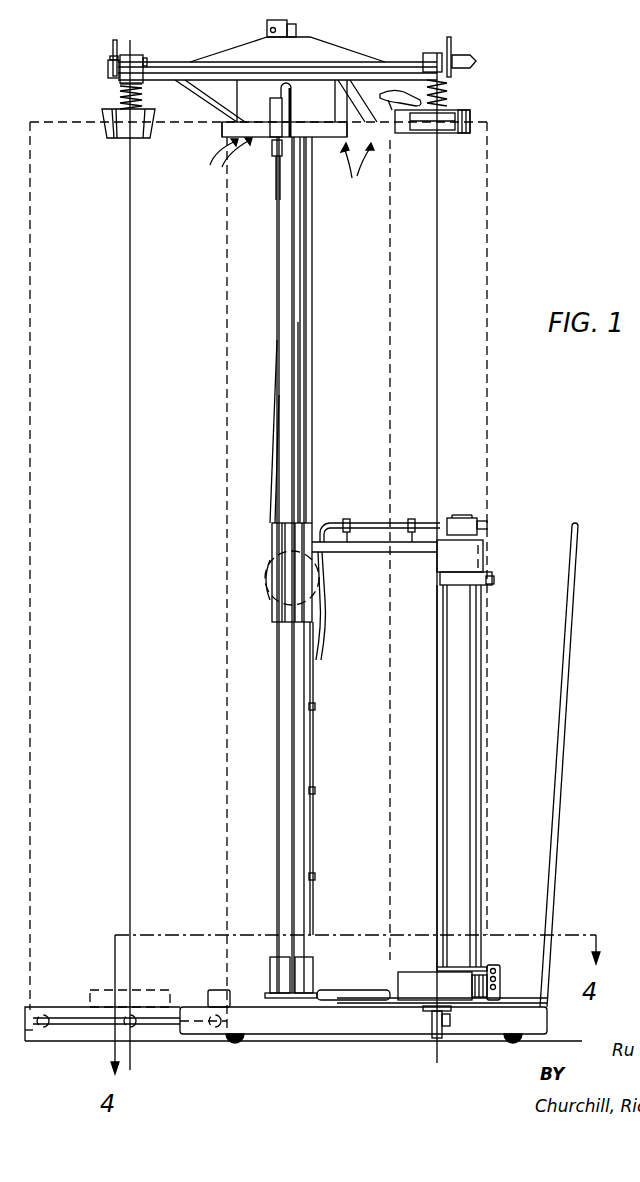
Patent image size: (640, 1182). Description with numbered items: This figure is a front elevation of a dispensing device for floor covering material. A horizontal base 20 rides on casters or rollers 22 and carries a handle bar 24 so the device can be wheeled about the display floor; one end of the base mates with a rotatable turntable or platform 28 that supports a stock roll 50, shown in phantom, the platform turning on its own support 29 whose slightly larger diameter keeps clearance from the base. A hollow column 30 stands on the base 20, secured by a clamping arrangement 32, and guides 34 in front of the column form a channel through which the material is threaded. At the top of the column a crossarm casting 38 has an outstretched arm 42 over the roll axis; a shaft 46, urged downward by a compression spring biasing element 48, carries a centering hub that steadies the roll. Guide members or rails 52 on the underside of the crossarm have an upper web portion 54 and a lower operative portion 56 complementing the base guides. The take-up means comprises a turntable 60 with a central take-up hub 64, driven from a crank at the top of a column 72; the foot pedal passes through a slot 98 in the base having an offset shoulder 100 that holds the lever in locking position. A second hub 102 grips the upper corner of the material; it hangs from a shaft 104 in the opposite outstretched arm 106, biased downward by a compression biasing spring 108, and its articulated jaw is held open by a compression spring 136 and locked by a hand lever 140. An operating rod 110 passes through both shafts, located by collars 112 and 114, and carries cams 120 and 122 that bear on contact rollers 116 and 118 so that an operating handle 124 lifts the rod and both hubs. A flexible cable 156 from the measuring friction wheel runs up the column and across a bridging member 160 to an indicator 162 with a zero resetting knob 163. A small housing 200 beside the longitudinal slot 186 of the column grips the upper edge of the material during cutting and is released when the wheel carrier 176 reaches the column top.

The horizontal base 20 is at (345, 1030).
The casters or rollers 22 is at (232, 1043).
The handle bar 24 is at (568, 630).
The turntable or platform 28 is at (72, 1006).
The support 29 is at (80, 1034).
The hollow column 30 is at (306, 420).
The clamping arrangement 32 is at (272, 972).
The guides 34 is at (248, 996).
The crossarm casting 38 is at (255, 34).
The outstretched arm 42 is at (222, 60).
The shaft 46 is at (143, 97).
The compression spring biasing element 48 is at (110, 97).
The stock roll 50 is at (52, 118).
The guide members or rails 52 is at (279, 166).
The upper web portion 54 is at (337, 82).
The lower operative portion 56 is at (340, 135).
The horizontal circular platform or turntable 60 is at (510, 1000).
The take-up hub 64 is at (410, 982).
The column 72 is at (468, 686).
The slot 98 is at (432, 1024).
The offset shoulder 100 is at (450, 1030).
The second hub 102 is at (470, 123).
The shaft 104 is at (470, 112).
The outstretched arm 106 is at (370, 70).
The compression biasing spring 108 is at (422, 100).
The operating rod 110 is at (320, 58).
The collar 112 is at (135, 56).
The collar 114 is at (430, 53).
The contact roller 116 is at (115, 78).
The contact roller 118 is at (448, 90).
The cam 120 is at (113, 45).
The cam 122 is at (451, 50).
The operating handle 124 is at (468, 56).
The compression spring 136 is at (471, 128).
The hand lever 140 is at (388, 102).
The flexible cable 156 is at (348, 524).
The bridging member 160 is at (372, 553).
The indicator 162 is at (460, 516).
The zero resetting knob 163 is at (488, 525).
The wheel carrier 176 is at (292, 100).
The longitudinal slot 186 is at (296, 470).
The housing 200 is at (222, 130).